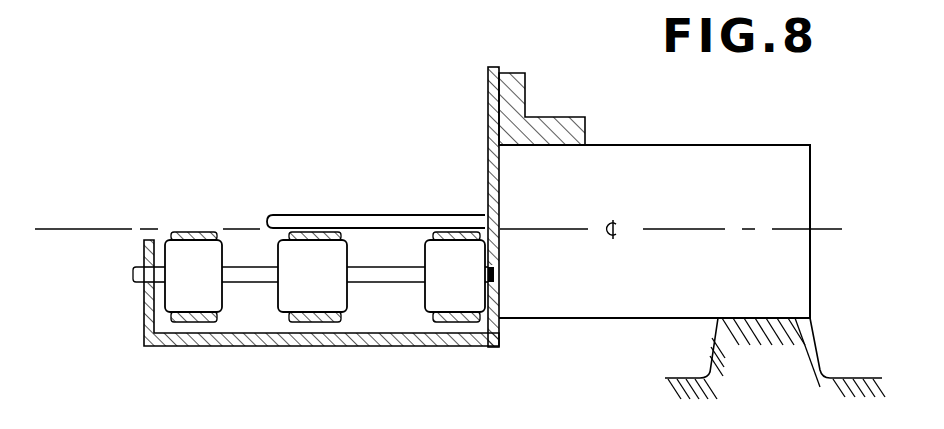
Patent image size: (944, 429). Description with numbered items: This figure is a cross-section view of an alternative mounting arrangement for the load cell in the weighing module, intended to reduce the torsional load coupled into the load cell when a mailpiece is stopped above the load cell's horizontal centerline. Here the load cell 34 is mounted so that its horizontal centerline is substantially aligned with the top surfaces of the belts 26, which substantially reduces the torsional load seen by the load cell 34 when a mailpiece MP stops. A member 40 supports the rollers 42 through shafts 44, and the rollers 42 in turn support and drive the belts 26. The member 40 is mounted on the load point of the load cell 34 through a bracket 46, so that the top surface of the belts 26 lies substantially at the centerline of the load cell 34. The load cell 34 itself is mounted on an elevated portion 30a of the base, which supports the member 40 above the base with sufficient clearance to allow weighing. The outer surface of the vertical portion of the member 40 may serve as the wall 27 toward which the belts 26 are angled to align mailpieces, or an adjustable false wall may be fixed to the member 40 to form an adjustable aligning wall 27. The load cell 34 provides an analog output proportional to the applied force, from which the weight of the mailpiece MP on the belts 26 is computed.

The belts 26 is at (180, 230).
The wall 27 is at (487, 88).
The elevated portion 30a is at (730, 337).
The load cell 34 is at (707, 155).
The member 40 is at (502, 333).
The rollers 42 is at (180, 297).
The shafts 44 is at (140, 268).
The bracket 46 is at (522, 73).
The mailpiece MP is at (380, 220).